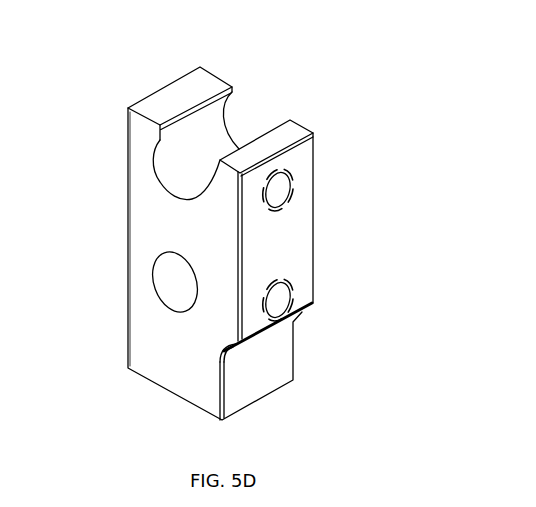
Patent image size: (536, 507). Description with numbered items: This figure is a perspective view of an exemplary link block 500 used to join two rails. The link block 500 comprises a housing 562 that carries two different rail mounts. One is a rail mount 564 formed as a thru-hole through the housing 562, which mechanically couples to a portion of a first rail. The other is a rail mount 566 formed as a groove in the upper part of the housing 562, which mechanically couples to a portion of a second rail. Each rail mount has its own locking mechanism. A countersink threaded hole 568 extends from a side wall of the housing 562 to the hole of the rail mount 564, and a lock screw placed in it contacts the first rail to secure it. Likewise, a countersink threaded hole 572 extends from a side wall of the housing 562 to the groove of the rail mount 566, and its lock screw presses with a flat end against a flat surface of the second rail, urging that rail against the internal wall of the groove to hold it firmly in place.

The link block 500 is at (289, 82).
The housing 562 is at (170, 83).
The rail mount 566 is at (166, 194).
The rail mount 564 is at (169, 308).
The countersink threaded hole 572 is at (285, 174).
The countersink threaded hole 568 is at (285, 283).